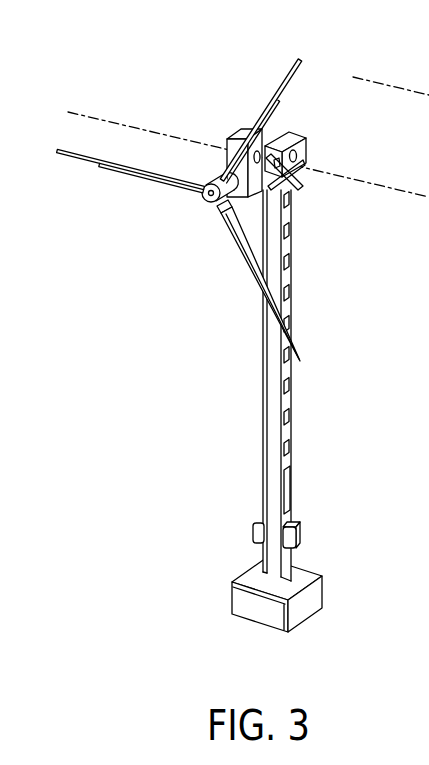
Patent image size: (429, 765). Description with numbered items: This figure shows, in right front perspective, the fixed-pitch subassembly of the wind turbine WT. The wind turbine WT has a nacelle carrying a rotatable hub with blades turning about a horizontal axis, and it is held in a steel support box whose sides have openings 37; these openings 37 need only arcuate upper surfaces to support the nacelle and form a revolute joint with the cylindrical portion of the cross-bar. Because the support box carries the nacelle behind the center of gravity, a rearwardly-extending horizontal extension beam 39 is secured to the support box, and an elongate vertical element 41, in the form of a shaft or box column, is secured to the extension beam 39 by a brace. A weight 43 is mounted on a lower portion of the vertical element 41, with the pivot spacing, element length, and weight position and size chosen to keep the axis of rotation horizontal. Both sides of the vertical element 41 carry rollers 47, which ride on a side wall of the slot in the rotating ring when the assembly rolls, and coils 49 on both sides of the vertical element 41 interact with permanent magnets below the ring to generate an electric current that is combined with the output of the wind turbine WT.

The openings 37 is at (264, 153).
The horizontal extension beam 39 is at (304, 157).
The elongate vertical element 41 is at (288, 280).
The weight 43 is at (311, 600).
The rollers 47 is at (286, 490).
The coils 49 is at (298, 536).
The wind turbine WT is at (170, 232).